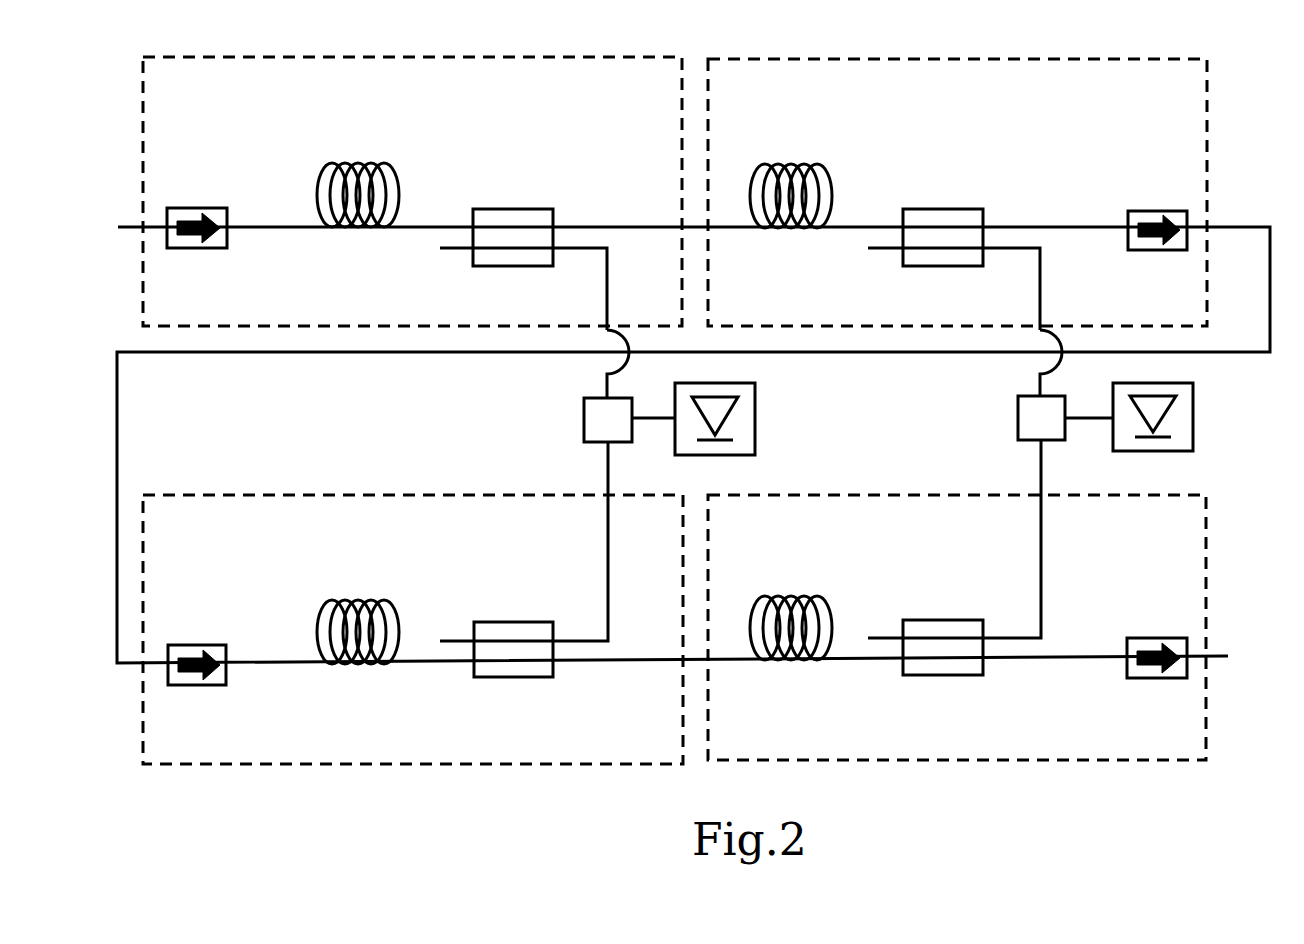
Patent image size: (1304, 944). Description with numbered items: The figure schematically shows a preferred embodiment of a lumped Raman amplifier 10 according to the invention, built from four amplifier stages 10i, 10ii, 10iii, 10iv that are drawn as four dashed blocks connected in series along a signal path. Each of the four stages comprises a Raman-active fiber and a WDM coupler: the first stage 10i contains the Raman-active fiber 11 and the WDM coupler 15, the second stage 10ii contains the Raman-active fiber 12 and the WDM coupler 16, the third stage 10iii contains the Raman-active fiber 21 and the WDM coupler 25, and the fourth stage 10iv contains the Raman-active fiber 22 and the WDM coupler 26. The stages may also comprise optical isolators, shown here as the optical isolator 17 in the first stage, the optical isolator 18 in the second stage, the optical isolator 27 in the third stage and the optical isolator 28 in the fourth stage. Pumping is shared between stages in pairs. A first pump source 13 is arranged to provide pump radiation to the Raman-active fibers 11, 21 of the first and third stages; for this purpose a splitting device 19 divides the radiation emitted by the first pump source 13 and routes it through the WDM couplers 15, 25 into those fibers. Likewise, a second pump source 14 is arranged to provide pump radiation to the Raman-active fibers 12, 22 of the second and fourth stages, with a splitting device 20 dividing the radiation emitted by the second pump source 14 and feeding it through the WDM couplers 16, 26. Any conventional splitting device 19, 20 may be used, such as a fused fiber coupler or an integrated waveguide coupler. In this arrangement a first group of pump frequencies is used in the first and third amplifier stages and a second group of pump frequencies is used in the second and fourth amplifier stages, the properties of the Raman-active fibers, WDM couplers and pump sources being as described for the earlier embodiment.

The lumped Raman amplifier 10 is at (1232, 137).
The first stage 10i is at (405, 327).
The second stage 10ii is at (878, 327).
The third stage 10iii is at (413, 767).
The fourth stage 10iv is at (965, 760).
The Raman-active fiber 11 is at (363, 165).
The Raman-active fiber 12 is at (807, 167).
The first pump source 13 is at (755, 415).
The second pump source 14 is at (1195, 413).
The WDM coupler 15 is at (542, 208).
The WDM coupler 16 is at (973, 208).
The optical isolator 17 is at (204, 208).
The optical isolator 18 is at (1168, 211).
The splitting device 19 is at (580, 417).
The splitting device 20 is at (1013, 418).
The Raman-active fiber 21 is at (365, 602).
The Raman-active fiber 22 is at (808, 598).
The WDM coupler 25 is at (508, 622).
The WDM coupler 26 is at (932, 623).
The optical isolator 27 is at (205, 645).
The optical isolator 28 is at (1167, 638).